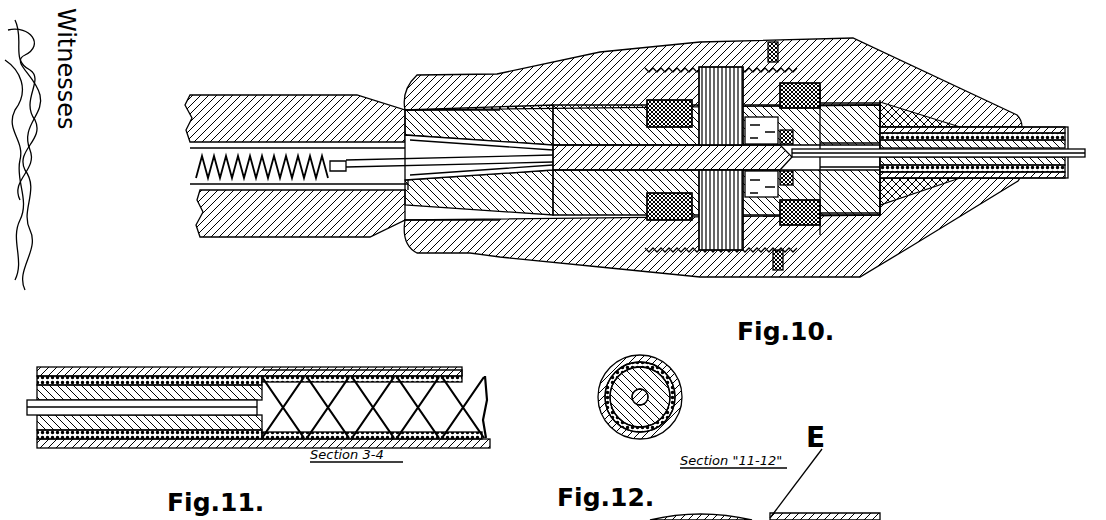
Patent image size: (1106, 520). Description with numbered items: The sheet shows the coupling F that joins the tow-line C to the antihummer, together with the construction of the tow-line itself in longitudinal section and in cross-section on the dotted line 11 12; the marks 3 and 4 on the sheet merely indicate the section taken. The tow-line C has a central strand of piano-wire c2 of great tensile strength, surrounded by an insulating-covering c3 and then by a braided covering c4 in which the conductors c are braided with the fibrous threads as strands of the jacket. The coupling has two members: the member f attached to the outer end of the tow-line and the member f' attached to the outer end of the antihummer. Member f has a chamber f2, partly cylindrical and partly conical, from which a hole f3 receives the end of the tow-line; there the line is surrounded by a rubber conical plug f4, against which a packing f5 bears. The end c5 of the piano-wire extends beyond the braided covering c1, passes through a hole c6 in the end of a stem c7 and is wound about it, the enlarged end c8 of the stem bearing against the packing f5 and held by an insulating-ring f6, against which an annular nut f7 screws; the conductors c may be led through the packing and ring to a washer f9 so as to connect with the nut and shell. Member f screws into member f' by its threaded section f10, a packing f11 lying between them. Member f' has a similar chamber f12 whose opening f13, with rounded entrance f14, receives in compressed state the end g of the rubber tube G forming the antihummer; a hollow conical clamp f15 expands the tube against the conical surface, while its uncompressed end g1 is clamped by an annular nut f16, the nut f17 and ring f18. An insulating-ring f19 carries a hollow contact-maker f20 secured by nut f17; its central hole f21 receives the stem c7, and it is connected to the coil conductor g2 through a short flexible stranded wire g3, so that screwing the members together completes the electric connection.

In FIG. 10, the rubber tube G is at (327, 125).
In FIG. 10, the end of the rubber tube g is at (495, 108).
In FIG. 10, the annular uncompressed end g1 is at (612, 100).
In FIG. 10, the conductor g2 is at (310, 173).
In FIG. 10, the flexible stranded wire g3 is at (400, 177).
In FIG. 10, the coupling member f is at (713, 186).
In FIG. 10, the coupling member f' is at (485, 270).
In FIG. 10, the chamber f2 is at (860, 183).
In FIG. 10, the hole f3 is at (1003, 187).
In FIG. 10, the conical plug f4 is at (907, 190).
In FIG. 10, the packing f5 is at (880, 210).
In FIG. 10, the insulating-ring f6 is at (843, 223).
In FIG. 10, the annular nut f7 is at (780, 233).
In FIG. 10, the washer f9 is at (787, 103).
In FIG. 10, the threaded section f10 is at (743, 250).
In FIG. 10, the packing f11 is at (770, 40).
In FIG. 10, the chamber f12 is at (540, 237).
In FIG. 10, the opening f13 is at (421, 90).
In FIG. 10, the rounded entrance f14 is at (404, 96).
In FIG. 10, the hollow conical clamp f15 is at (540, 120).
In FIG. 10, the annular nut f16 is at (677, 247).
In FIG. 10, the nut f17 is at (617, 210).
In FIG. 10, the ring f18 is at (630, 247).
In FIG. 10, the insulating-ring f19 is at (643, 77).
In FIG. 10, the hollow contact-maker f20 is at (681, 110).
In FIG. 10, the central hole f21 is at (698, 85).
In FIG. 10, the coupling F is at (763, 43).
In FIG. 10, the tow-line C is at (1033, 127).
In FIG. 12, the tow-line C is at (600, 420).
In FIG. 10, the conductors c is at (993, 127).
In FIG. 11, the conductors c is at (297, 367).
In FIG. 12, the conductors c is at (622, 363).
In FIG. 10, the braided covering c1 is at (920, 125).
In FIG. 11, the braided covering c1 is at (234, 367).
In FIG. 10, the strand of piano-wire c2 is at (1021, 124).
In FIG. 11, the strand of piano-wire c2 is at (143, 367).
In FIG. 10, the insulating-covering c3 is at (958, 136).
In FIG. 11, the insulating-covering c3 is at (183, 390).
In FIG. 11, the braided covering c4 is at (467, 370).
In FIG. 10, the end of the piano-wire c5 is at (897, 118).
In FIG. 10, the hole c6 is at (845, 108).
In FIG. 10, the stem c7 is at (790, 95).
In FIG. 10, the enlarged end c8 is at (840, 90).
In FIG. 11, the dotted line 11 12 11 is at (125, 365).
In FIG. 11, the dotted line 11 12 is at (127, 450).
In FIG. 12, the section line 3 is at (637, 340).
In FIG. 12, the section line 4 is at (642, 458).